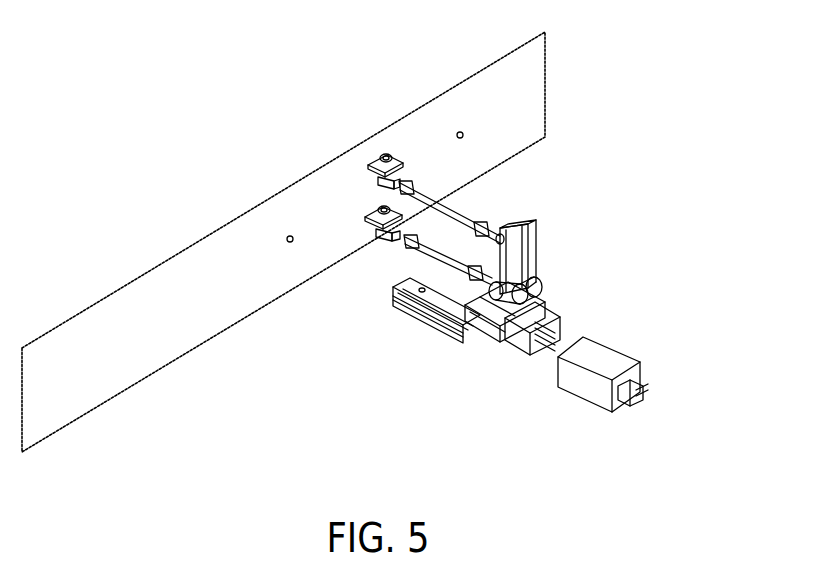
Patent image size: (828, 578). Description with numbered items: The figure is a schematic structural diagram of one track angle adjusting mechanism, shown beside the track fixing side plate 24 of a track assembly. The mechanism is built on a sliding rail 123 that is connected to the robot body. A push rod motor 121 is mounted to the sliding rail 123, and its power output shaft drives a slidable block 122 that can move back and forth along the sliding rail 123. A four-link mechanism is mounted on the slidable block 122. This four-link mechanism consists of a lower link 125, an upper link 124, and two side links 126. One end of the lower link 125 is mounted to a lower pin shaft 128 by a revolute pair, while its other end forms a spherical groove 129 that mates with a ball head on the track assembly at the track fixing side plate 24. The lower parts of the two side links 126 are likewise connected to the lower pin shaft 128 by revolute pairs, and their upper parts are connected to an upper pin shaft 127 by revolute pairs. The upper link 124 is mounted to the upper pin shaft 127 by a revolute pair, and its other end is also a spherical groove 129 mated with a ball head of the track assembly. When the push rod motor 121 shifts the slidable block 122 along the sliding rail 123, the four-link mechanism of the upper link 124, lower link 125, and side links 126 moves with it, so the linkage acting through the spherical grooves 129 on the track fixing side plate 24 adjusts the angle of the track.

The track fixing side plate 24 is at (283, 226).
The push rod motor 121 is at (546, 416).
The slidable block 122 is at (428, 399).
The sliding rail 123 is at (331, 341).
The upper link 124 is at (557, 141).
The lower link 125 is at (261, 210).
The side link 126 is at (605, 254).
The upper pin shaft 127 is at (610, 199).
The lower pin shaft 128 is at (363, 373).
The spherical groove 129 is at (251, 117).